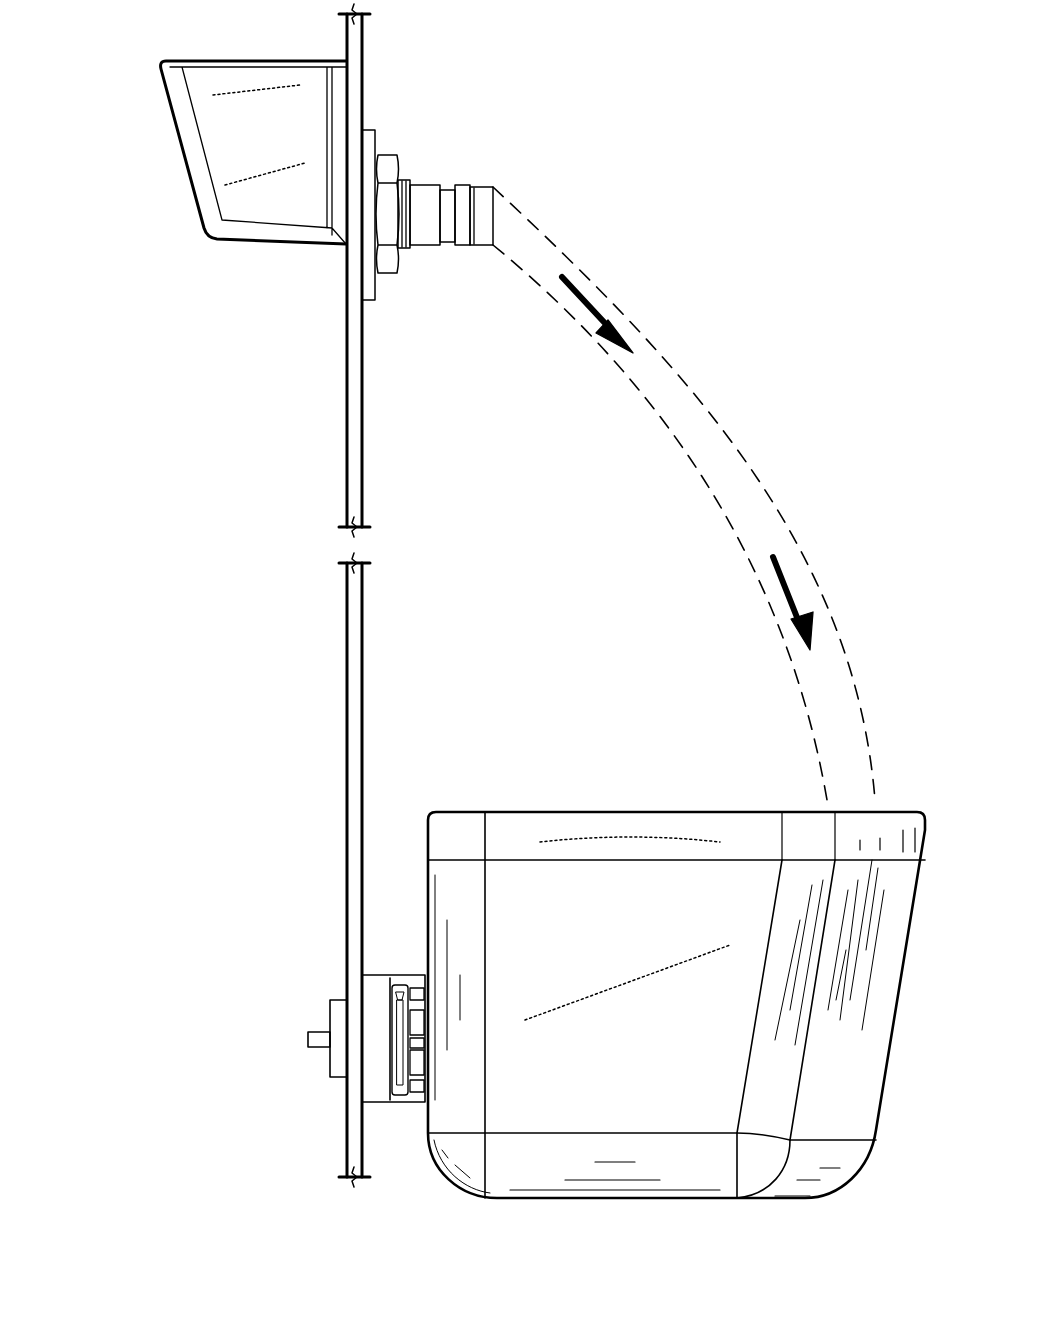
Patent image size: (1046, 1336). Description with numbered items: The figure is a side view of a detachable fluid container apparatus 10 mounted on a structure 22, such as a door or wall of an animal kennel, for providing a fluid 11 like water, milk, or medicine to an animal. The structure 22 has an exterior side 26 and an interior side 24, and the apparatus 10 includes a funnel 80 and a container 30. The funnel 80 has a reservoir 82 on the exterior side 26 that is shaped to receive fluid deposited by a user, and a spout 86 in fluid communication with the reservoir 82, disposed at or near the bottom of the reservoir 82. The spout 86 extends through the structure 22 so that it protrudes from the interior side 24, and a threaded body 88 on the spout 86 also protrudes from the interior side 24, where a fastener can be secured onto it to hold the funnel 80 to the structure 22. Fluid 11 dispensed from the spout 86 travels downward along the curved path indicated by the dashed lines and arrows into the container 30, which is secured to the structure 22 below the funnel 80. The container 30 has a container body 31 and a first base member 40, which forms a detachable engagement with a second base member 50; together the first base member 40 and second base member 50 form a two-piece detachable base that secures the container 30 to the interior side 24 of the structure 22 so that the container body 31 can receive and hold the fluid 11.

The detachable fluid container apparatus 10 is at (770, 145).
The fluid 11 is at (718, 417).
The structure 22 is at (396, 505).
The interior side 24 is at (362, 695).
The exterior side 26 is at (347, 418).
The container 30 is at (908, 790).
The container body 31 is at (858, 988).
The first base member 40 is at (401, 985).
The second base member 50 is at (375, 1083).
The funnel 80 is at (405, 135).
The reservoir 82 is at (238, 135).
The spout 86 is at (478, 210).
The threaded body 88 is at (400, 250).